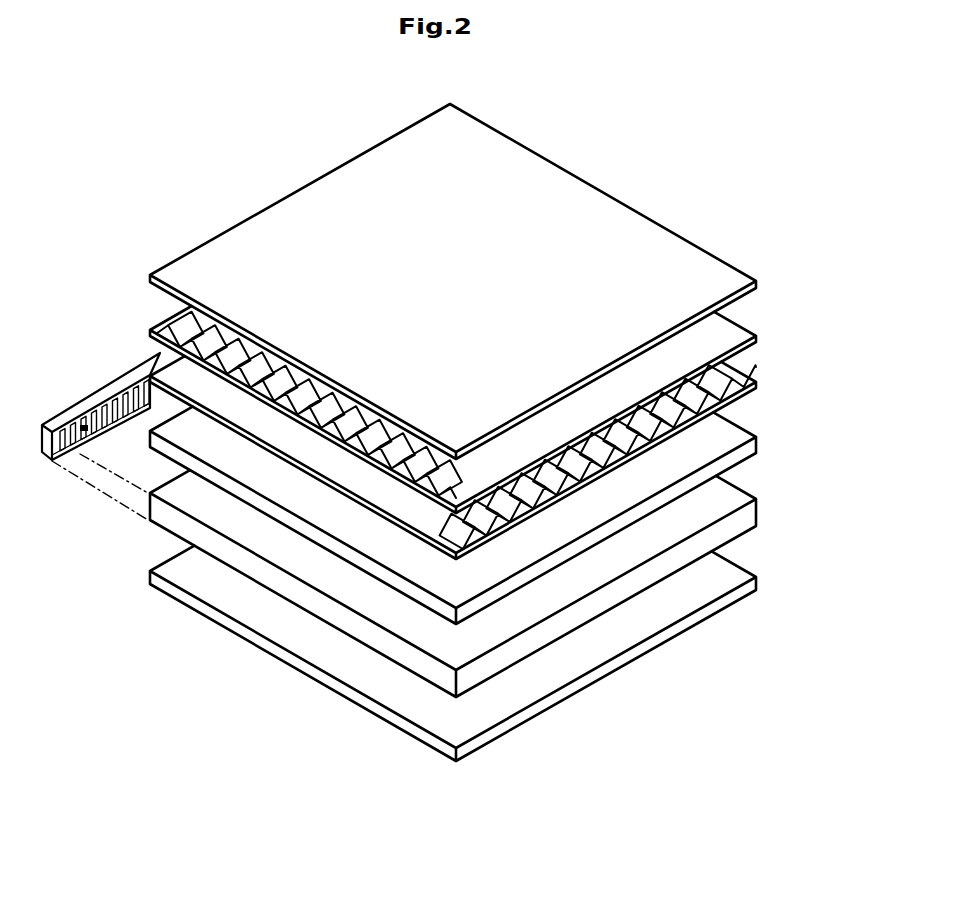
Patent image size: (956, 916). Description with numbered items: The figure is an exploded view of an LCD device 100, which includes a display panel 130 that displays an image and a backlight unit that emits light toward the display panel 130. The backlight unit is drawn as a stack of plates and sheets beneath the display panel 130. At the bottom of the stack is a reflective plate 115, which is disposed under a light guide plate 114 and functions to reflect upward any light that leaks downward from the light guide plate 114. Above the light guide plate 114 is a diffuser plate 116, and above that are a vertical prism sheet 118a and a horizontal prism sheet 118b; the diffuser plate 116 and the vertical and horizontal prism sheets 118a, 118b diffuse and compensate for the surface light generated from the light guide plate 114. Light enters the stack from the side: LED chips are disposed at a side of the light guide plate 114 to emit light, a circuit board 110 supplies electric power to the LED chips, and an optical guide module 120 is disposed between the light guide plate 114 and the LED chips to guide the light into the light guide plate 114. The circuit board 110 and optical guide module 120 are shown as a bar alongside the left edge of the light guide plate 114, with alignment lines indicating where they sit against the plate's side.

The LCD device 100 is at (243, 118).
The circuit board 110 is at (68, 413).
The optical guide module 120 is at (117, 397).
The light guide plate 114 is at (735, 502).
The reflective plate 115 is at (735, 577).
The diffuser plate 116 is at (737, 438).
The vertical prism sheet 118a is at (738, 333).
The horizontal prism sheet 118b is at (743, 388).
The display panel 130 is at (645, 233).